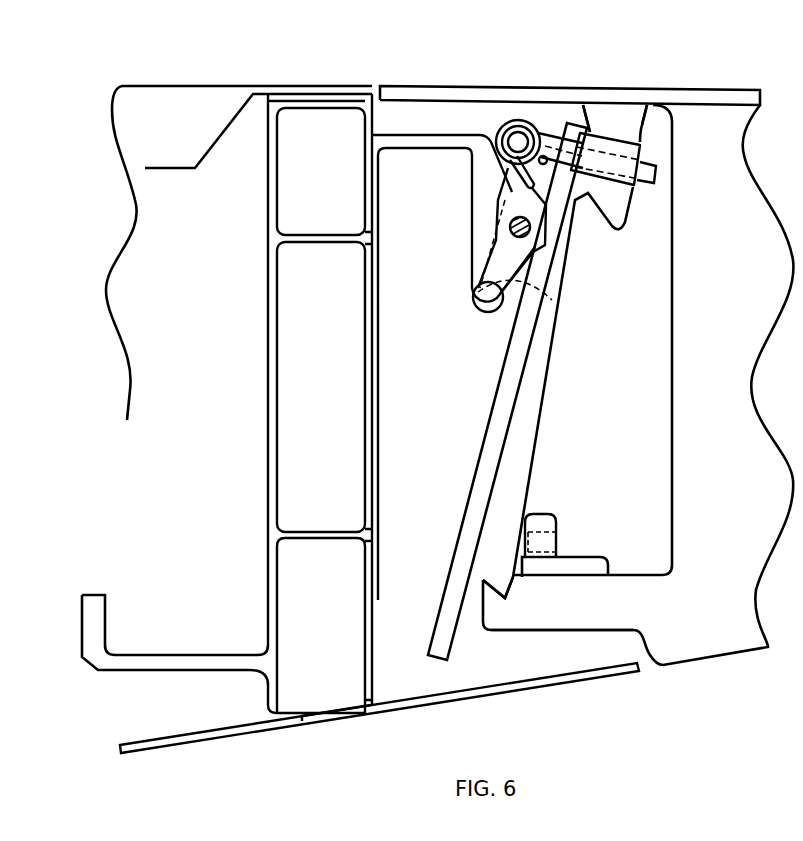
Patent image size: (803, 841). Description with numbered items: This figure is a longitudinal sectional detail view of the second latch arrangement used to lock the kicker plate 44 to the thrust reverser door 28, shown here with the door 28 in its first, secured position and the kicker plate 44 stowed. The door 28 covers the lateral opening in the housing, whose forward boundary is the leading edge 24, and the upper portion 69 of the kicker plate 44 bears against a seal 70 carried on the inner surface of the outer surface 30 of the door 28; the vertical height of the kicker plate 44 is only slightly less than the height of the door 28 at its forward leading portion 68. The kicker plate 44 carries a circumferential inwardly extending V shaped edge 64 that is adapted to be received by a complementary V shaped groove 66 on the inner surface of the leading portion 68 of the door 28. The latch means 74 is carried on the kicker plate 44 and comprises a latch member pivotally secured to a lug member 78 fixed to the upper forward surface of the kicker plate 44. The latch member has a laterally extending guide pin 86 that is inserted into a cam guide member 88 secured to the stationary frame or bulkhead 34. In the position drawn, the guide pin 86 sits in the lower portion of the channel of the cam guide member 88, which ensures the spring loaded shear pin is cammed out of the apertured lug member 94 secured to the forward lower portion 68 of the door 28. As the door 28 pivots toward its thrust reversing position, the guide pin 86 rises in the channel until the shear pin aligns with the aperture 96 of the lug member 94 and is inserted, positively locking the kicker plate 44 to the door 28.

The leading edge 24 is at (630, 672).
The thrust reverser door 28 is at (703, 660).
The outer surface 30 is at (535, 86).
The stationary frame or bulkhead 34 is at (374, 404).
The kicker plate 44 is at (546, 358).
The V shaped edge 64 is at (637, 185).
The V shaped groove 66 is at (483, 580).
The leading portion 68 is at (542, 632).
The upper portion 69 is at (642, 150).
The seal 70 is at (645, 124).
The latch means 74 is at (437, 291).
The lug member 78 is at (573, 192).
The guide pin 86 is at (552, 300).
The cam guide member 88 is at (470, 208).
The lug member 94 is at (556, 516).
The aperture 96 is at (555, 543).